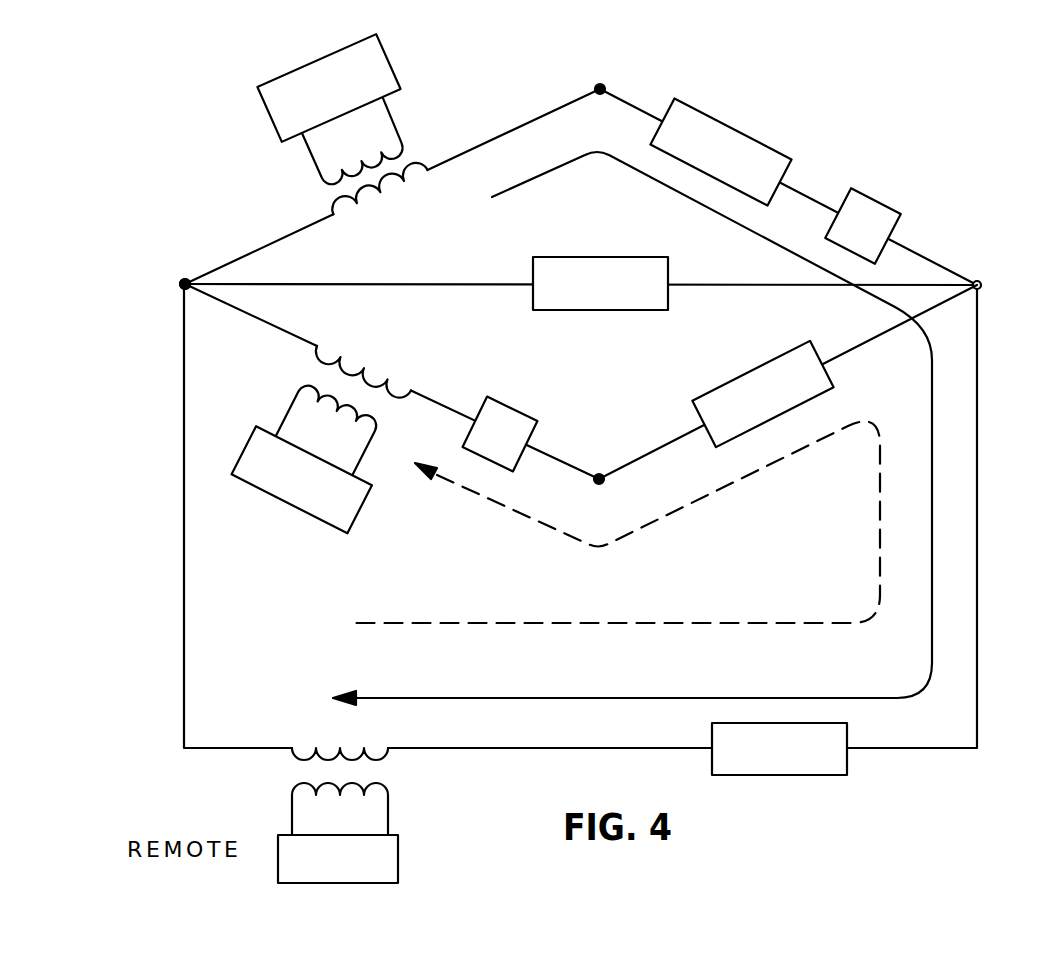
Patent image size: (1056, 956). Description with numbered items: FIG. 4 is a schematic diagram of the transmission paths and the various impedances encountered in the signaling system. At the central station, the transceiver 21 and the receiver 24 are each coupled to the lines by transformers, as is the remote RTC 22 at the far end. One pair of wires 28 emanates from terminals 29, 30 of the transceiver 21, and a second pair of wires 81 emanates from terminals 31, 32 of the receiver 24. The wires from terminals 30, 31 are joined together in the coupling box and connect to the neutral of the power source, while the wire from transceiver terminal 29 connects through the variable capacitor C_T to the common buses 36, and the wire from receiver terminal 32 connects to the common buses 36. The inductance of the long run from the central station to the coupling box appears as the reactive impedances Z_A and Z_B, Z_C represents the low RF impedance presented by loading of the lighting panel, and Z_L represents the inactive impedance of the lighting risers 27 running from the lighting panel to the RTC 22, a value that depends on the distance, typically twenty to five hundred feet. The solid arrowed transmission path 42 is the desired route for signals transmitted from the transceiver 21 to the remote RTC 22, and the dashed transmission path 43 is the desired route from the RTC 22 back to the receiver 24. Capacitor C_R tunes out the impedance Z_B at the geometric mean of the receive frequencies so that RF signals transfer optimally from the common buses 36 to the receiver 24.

The transceiver 21 is at (267, 117).
The RTC 22 is at (405, 845).
The receiver 24 is at (277, 498).
The lighting risers 27 is at (908, 753).
The pair of wires 28 is at (630, 98).
The terminal 29 is at (595, 88).
The terminal 30 is at (180, 281).
The terminal 31 is at (578, 283).
The terminal 32 is at (602, 472).
The common buses 36 is at (982, 282).
The transmission path 42 is at (927, 688).
The transmission path 43 is at (787, 462).
The second pair of wires 81 is at (873, 345).